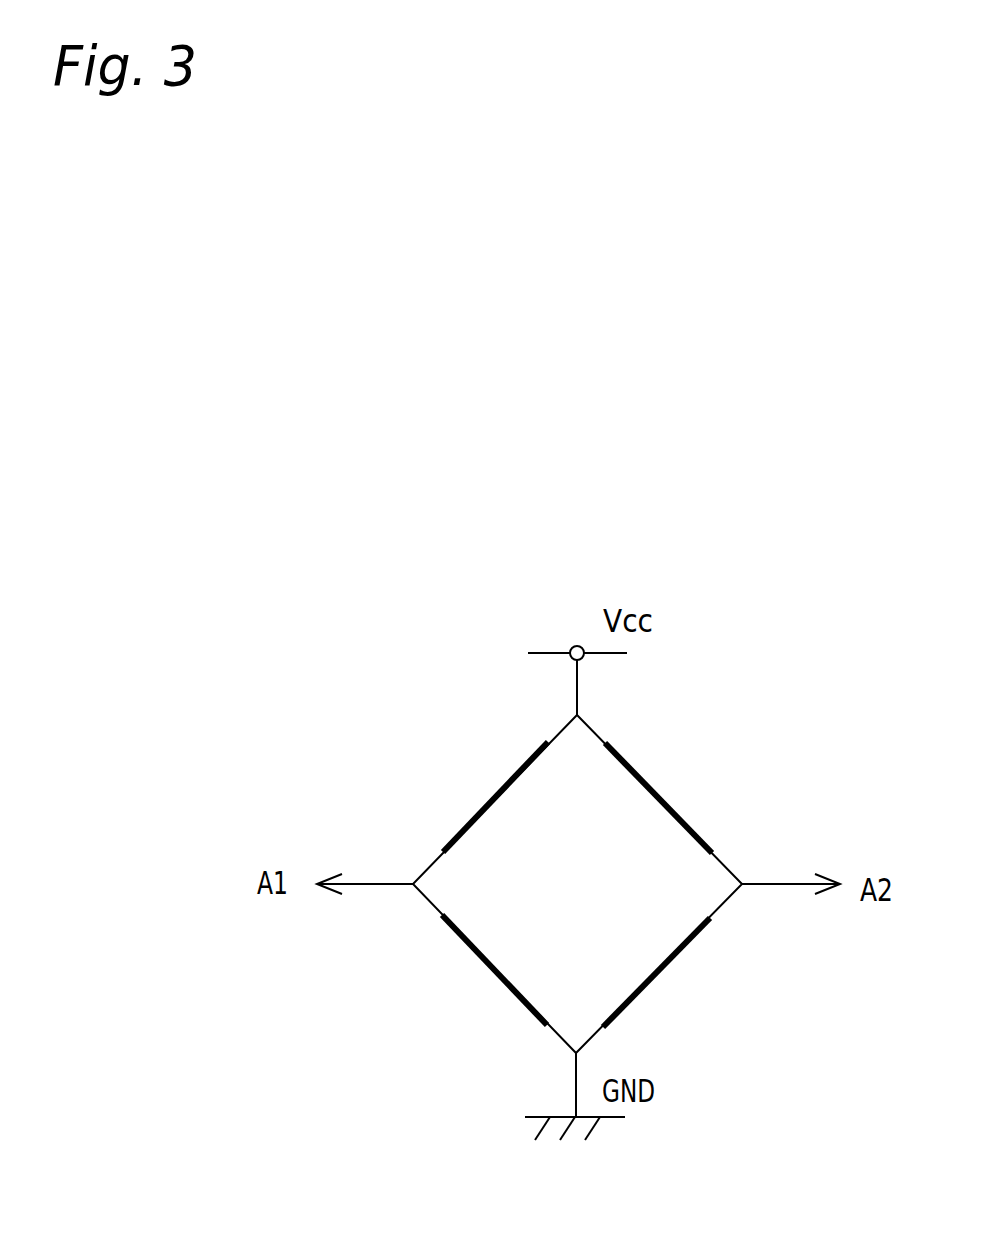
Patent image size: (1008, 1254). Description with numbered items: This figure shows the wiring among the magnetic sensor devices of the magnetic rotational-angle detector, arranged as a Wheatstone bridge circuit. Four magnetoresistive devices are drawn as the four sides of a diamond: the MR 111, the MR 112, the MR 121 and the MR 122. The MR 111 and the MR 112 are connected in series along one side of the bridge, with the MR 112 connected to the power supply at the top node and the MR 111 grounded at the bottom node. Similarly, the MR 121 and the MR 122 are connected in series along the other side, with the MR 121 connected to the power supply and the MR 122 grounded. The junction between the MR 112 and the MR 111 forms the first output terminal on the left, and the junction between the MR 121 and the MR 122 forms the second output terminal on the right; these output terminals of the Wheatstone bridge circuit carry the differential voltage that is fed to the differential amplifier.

The MR MR112 is at (513, 775).
The MR MR121 is at (642, 773).
The MR MR111 is at (512, 993).
The MR MR122 is at (653, 985).